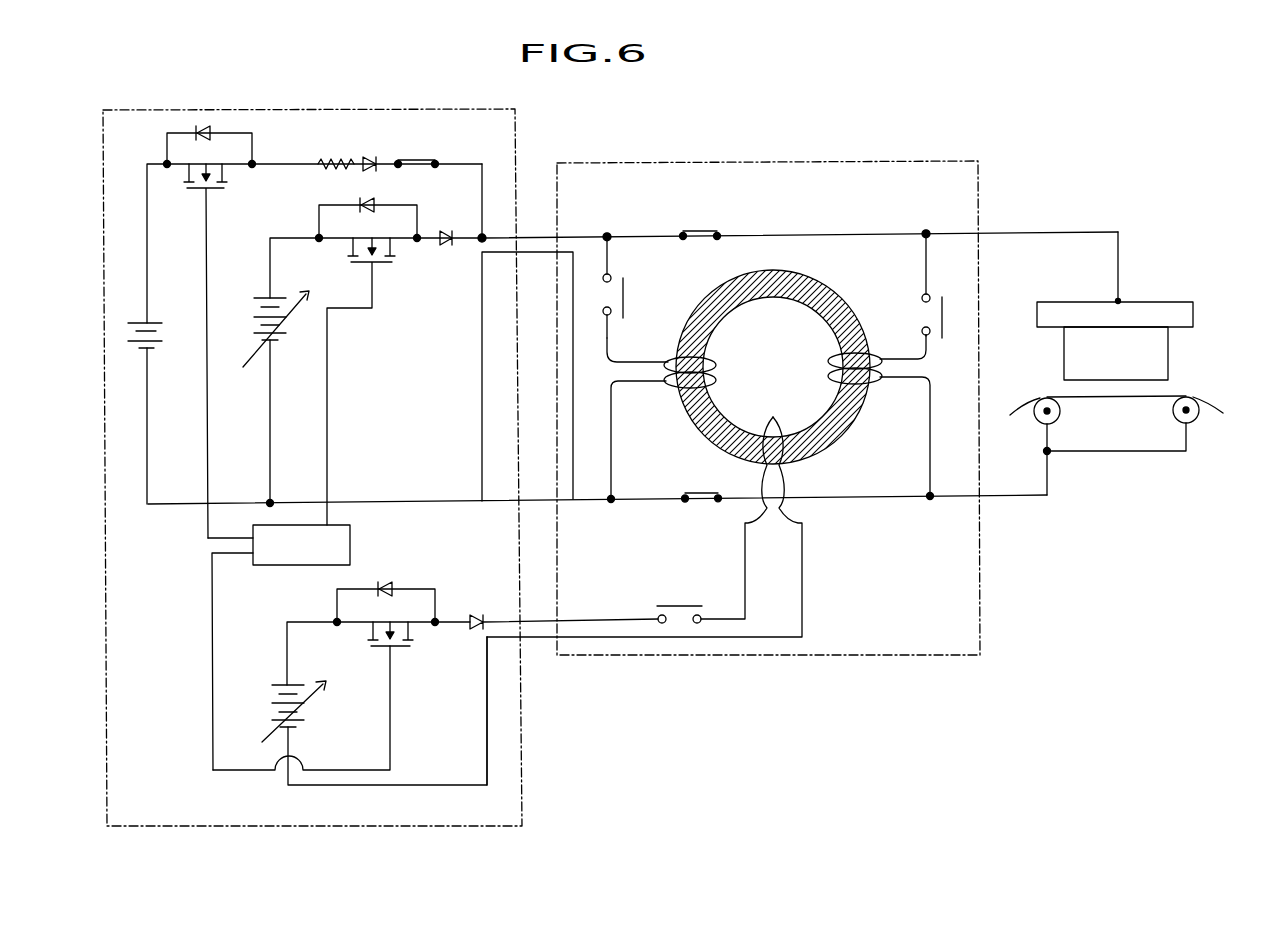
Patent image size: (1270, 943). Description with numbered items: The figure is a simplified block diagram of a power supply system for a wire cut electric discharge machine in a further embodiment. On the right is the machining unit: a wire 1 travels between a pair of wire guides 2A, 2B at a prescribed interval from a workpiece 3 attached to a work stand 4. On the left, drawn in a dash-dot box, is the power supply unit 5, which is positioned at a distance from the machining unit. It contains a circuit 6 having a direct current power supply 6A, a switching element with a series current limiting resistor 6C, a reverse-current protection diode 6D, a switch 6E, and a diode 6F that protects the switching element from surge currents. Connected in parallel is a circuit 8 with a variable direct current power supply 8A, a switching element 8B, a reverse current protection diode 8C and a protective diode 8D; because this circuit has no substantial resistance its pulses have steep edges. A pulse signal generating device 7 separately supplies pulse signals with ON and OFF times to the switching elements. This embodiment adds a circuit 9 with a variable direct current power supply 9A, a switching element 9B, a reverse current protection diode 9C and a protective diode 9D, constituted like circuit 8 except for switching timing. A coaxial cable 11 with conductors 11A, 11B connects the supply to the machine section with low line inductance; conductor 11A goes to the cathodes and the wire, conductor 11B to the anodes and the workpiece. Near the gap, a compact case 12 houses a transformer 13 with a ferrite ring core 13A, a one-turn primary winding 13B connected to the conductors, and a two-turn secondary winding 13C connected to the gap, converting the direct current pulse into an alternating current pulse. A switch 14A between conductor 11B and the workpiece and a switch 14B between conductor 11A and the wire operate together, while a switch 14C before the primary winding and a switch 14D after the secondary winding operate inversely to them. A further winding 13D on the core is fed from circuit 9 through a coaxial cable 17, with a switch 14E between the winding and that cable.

The wire 1 is at (1060, 395).
The wire guide 2A is at (1060, 417).
The wire guide 2B is at (1193, 418).
The workpiece 3 is at (1153, 362).
The work stand 4 is at (1152, 308).
The power supply unit 5 is at (300, 110).
The circuit 6 is at (145, 263).
The direct current power supply 6A is at (168, 336).
The current limiting resistor 6C is at (329, 148).
The reverse-current protection diode 6D is at (378, 148).
The switch 6E is at (428, 147).
The diode 6F is at (190, 122).
The pulse signal generating device 7 is at (357, 540).
The circuit 8 is at (266, 290).
The variable direct current power supply 8A is at (255, 362).
The switching element 8B is at (348, 258).
The reverse current protection diode 8C is at (455, 254).
The diode 8D is at (380, 199).
The circuit 9 is at (285, 775).
The variable direct current power supply 9A is at (277, 681).
The switching element 9B is at (418, 640).
The reverse current protection diode 9C is at (478, 607).
The diode 9D is at (396, 582).
The coaxial cable 11 is at (633, 319).
The conductor 11A is at (530, 256).
The conductor 11B is at (530, 232).
The case 12 is at (755, 162).
The transformer 13 is at (710, 451).
The ferrite ring core 13A is at (697, 432).
The primary winding 13B is at (657, 384).
The secondary winding 13C is at (870, 390).
The winding 13D is at (787, 476).
The switch 14A is at (727, 200).
The switch 14B is at (692, 504).
The switch 14C is at (646, 285).
The switch 14D is at (947, 326).
The switch 14E is at (592, 595).
The coaxial cable 17 is at (533, 630).